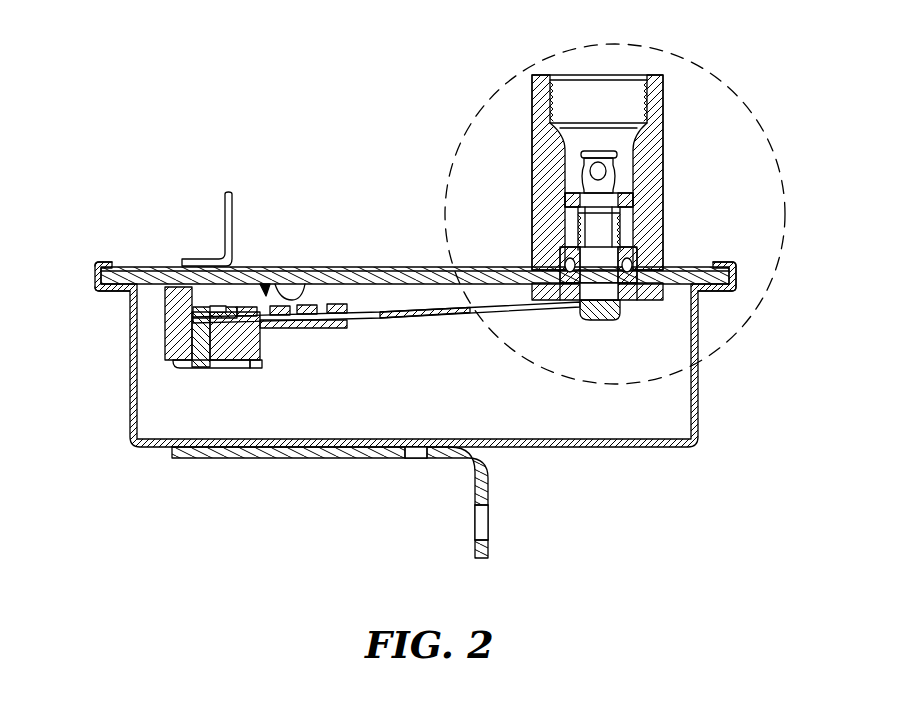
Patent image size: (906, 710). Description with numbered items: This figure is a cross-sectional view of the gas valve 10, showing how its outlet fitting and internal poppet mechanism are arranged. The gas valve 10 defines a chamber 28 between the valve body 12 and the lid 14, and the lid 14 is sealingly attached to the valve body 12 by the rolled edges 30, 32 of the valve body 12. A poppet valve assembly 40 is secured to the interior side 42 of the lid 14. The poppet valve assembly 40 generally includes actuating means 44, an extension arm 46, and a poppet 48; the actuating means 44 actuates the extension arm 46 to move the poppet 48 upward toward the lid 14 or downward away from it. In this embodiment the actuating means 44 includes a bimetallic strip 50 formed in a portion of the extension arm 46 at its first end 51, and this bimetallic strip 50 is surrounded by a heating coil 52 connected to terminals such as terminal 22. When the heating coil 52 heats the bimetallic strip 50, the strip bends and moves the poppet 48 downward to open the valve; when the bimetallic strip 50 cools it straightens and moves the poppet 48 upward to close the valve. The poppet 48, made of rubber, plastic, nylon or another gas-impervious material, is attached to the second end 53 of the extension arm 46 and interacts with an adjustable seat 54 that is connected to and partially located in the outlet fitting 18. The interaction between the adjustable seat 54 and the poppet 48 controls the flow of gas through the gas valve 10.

The gas valve 10 is at (120, 481).
The valve body 12 is at (130, 380).
The lid 14 is at (391, 281).
The outlet fitting 18 is at (665, 147).
The terminal 22 is at (227, 222).
The chamber 28 is at (597, 420).
The rolled edge 30 is at (731, 263).
The rolled edge 32 is at (99, 263).
The poppet valve assembly 40 is at (447, 350).
The interior side 42 is at (284, 299).
The actuating means 44 is at (280, 366).
The extension arm 46 is at (434, 314).
The poppet 48 is at (617, 302).
The bimetallic strip 50 is at (360, 308).
The first end 51 is at (264, 283).
The heating coil 52 is at (312, 306).
The second end 53 is at (612, 302).
The adjustable seat 54 is at (633, 238).